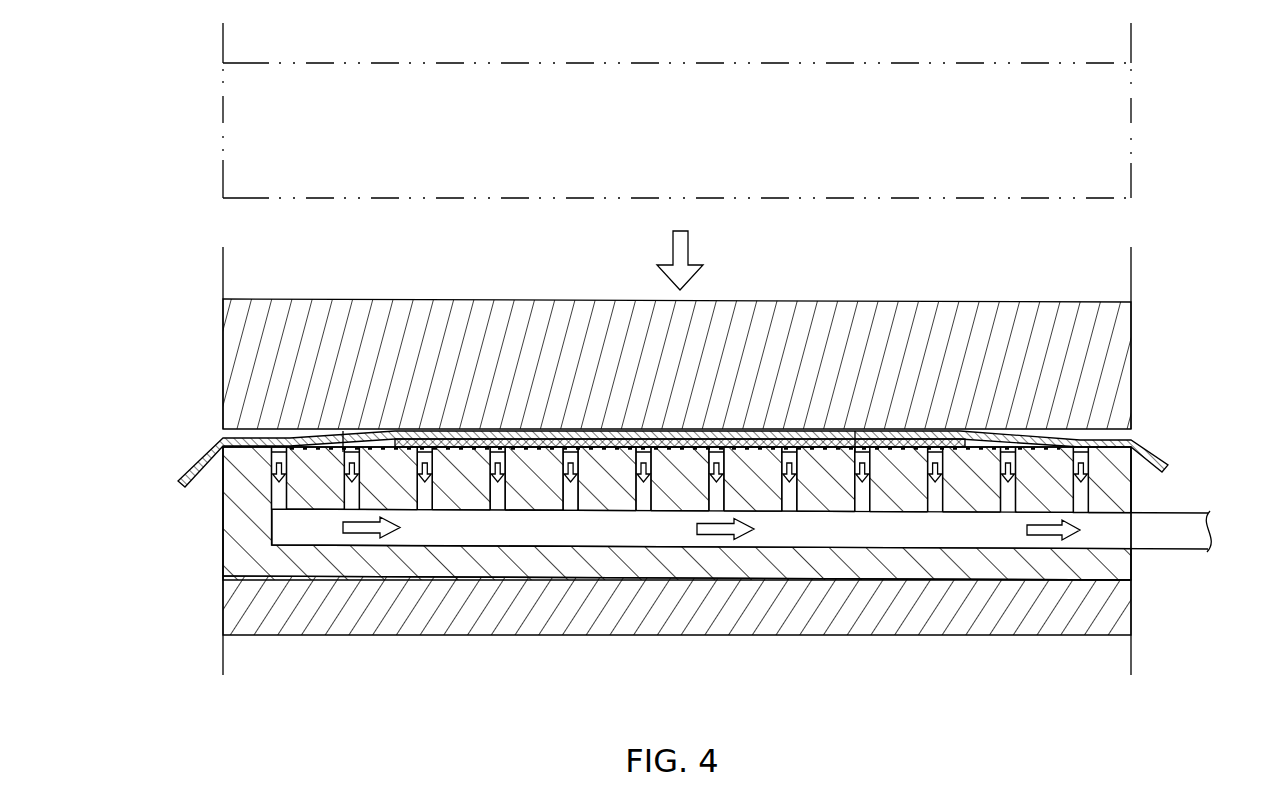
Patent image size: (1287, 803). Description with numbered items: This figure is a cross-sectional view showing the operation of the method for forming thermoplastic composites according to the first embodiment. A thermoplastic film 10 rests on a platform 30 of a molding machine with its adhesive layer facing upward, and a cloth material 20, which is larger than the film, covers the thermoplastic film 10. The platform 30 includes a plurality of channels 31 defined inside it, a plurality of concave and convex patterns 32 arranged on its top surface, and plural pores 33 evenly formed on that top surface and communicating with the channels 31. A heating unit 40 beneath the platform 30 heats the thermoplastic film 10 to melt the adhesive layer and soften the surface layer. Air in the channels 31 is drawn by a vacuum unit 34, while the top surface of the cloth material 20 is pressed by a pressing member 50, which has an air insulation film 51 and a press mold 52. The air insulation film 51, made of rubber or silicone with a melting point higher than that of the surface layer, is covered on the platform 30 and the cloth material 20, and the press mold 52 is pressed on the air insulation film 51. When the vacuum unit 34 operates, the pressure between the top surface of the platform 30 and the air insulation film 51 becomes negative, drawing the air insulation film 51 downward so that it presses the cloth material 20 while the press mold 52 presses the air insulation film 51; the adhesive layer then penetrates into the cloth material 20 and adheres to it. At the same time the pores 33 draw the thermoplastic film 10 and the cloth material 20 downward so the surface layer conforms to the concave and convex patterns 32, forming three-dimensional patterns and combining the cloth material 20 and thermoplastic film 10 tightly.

The thermoplastic film 10 is at (667, 464).
The cloth material 20 is at (820, 440).
The platform 30 is at (667, 464).
The channels 31 is at (350, 482).
The concave and convex patterns 32 is at (343, 450).
The pores 33 is at (637, 450).
The vacuum unit 34 is at (1165, 542).
The heating unit 40 is at (232, 603).
The pressing member 50 is at (1173, 327).
The air insulation film 51 is at (212, 448).
The press mold 52 is at (232, 174).